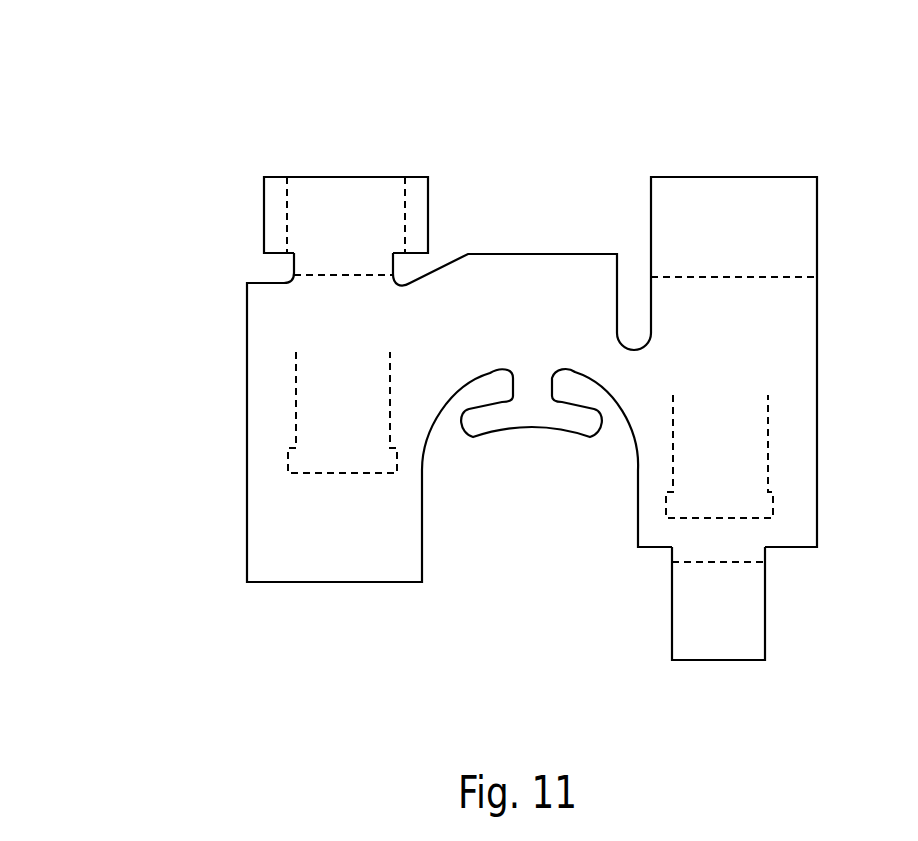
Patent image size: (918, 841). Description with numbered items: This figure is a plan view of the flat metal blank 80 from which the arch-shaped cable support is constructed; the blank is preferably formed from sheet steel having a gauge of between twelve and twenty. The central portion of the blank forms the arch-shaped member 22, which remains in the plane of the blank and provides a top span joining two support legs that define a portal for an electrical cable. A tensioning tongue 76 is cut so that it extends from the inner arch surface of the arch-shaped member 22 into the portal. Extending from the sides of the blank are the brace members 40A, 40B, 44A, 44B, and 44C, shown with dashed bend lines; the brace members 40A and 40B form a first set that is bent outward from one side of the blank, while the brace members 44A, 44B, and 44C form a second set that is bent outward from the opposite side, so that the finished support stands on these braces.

The metal blank 80 is at (189, 131).
The arch-shaped member 22 is at (555, 307).
The tensioning tongue 76 is at (542, 427).
The brace member 40A is at (346, 226).
The brace member 40B is at (342, 412).
The brace member 44A is at (734, 227).
The brace member 44B is at (719, 456).
The brace member 44C is at (718, 603).